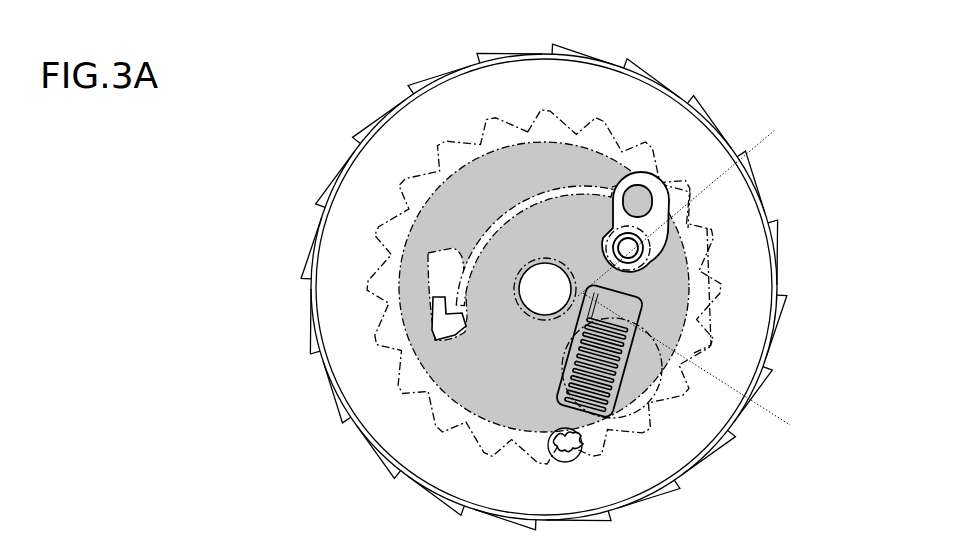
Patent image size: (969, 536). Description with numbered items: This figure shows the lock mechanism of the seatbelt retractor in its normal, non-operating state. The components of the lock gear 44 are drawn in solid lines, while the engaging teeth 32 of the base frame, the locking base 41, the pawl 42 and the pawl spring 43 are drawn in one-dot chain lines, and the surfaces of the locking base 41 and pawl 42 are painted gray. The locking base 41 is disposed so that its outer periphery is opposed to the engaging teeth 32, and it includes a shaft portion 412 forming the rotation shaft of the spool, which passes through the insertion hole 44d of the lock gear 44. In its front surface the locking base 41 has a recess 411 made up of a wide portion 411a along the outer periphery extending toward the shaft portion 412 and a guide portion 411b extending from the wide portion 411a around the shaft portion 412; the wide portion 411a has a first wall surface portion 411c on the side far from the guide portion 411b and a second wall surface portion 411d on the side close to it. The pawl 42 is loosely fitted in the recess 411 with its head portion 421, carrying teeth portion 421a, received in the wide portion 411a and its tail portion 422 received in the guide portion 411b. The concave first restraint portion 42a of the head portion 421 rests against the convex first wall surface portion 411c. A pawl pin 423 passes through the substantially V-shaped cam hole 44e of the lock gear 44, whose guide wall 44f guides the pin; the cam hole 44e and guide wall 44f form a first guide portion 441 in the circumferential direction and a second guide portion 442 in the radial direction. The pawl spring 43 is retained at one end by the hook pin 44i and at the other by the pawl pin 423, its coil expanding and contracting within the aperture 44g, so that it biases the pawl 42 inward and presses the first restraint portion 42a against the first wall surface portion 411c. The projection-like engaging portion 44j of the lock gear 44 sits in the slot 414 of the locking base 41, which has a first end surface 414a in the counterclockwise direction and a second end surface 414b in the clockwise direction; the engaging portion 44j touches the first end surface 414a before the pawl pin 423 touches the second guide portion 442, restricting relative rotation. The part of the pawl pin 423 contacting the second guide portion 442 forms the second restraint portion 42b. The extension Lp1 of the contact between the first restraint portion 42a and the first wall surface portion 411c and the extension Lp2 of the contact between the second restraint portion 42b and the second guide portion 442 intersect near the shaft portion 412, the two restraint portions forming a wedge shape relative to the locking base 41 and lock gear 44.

The lock gear 44 is at (318, 151).
The locking base 41 is at (517, 143).
The recess 411 is at (700, 252).
The engaging teeth 32 is at (478, 150).
The wide portion 411a is at (565, 186).
The guide portion 411b is at (477, 235).
The first wall surface portion 411c is at (648, 422).
The second wall surface portion 411d is at (585, 185).
The shaft portion 412 is at (559, 298).
The slot 414 is at (428, 270).
The first end surface 414a is at (462, 332).
The second end surface 414b is at (455, 233).
The pawl 42 is at (523, 224).
The head portion 421 is at (605, 222).
The teeth portion 421a is at (712, 293).
The tail portion 422 is at (508, 279).
The pawl pin 423 is at (614, 247).
The first restraint portion 42a is at (664, 313).
The second restraint portion 42b is at (612, 222).
The pawl spring 43 is at (574, 342).
The first guide portion 441 is at (690, 206).
The second guide portion 442 is at (678, 292).
The insertion hole 44d is at (518, 300).
The cam hole 44e is at (632, 200).
The guide wall 44f is at (657, 180).
The aperture 44g is at (560, 383).
The hook pin 44i is at (565, 463).
The engaging portion 44j is at (452, 342).
The extension Lp1 is at (700, 369).
The extension Lp2 is at (697, 207).